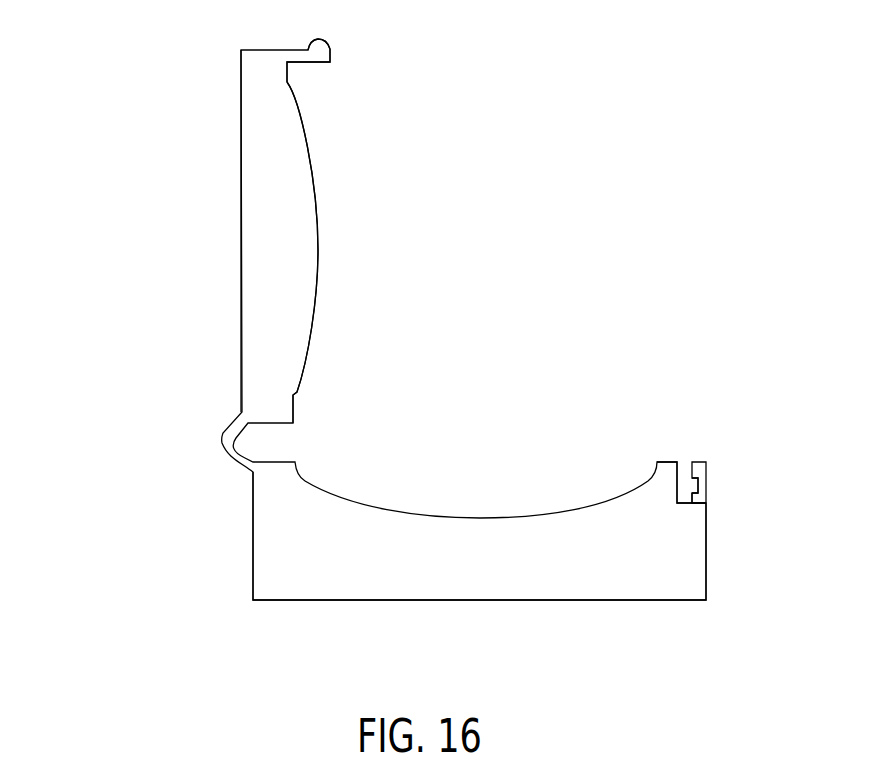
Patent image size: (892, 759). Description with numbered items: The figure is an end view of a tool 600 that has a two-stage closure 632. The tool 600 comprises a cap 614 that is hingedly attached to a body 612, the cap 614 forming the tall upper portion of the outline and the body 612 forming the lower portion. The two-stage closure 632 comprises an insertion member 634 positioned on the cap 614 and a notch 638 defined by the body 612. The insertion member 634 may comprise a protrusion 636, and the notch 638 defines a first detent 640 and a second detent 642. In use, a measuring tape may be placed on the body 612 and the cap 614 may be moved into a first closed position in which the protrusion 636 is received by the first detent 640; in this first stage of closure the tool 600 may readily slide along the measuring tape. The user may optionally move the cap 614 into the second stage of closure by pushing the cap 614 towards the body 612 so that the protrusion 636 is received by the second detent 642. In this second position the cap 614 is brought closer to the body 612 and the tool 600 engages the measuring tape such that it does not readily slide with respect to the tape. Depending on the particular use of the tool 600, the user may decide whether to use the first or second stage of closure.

The tool 600 is at (562, 130).
The body 612 is at (142, 560).
The cap 614 is at (144, 190).
The two-stage closure 632 is at (726, 434).
The insertion member 634 is at (340, 86).
The protrusion 636 is at (330, 45).
The notch 638 is at (680, 450).
The first detent 640 is at (700, 476).
The second detent 642 is at (700, 500).